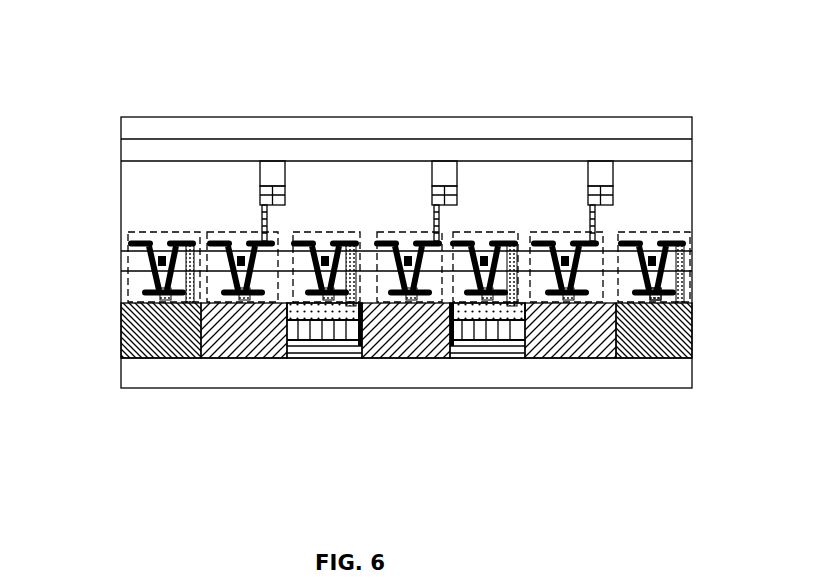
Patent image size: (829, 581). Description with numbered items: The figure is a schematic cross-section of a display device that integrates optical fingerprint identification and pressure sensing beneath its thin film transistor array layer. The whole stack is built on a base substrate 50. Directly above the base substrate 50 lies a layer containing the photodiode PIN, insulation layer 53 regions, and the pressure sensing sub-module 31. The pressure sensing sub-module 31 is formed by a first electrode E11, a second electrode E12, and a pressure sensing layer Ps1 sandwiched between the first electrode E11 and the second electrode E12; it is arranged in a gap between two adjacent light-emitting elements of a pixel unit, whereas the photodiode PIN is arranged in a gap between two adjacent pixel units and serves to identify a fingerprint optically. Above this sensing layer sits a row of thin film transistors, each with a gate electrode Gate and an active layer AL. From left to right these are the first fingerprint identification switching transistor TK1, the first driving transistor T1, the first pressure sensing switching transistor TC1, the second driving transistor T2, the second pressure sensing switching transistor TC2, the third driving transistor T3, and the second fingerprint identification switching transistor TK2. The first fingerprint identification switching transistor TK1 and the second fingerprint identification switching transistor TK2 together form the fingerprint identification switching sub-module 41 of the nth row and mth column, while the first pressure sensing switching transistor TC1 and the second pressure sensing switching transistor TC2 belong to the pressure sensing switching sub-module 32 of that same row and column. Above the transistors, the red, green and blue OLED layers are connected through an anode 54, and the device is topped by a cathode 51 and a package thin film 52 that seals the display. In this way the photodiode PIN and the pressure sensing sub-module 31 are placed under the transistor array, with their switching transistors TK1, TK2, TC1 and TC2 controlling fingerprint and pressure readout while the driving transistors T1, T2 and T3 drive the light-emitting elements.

The first driving transistor T1 is at (240, 232).
The second driving transistor T2 is at (404, 232).
The third driving transistor T3 is at (531, 232).
The first pressure sensing switching transistor TC1 is at (322, 232).
The second pressure sensing switching transistor TC2 is at (490, 232).
The pressure sensing switching sub-module 32 is at (416, 169).
The first fingerprint identification switching transistor TK1 is at (152, 233).
The second fingerprint identification switching transistor TK2 is at (655, 232).
The fingerprint identification switching sub-module 41 is at (379, 169).
The cathode 51 is at (683, 148).
The package thin film 52 is at (683, 128).
The insulation layer 53 is at (222, 325).
The anode 54 is at (613, 192).
The base substrate 50 is at (581, 368).
The pressure sensing sub-module 31 is at (300, 398).
The gate electrode Gate is at (157, 262).
The photodiode PIN is at (132, 333).
The active layer AL is at (657, 297).
The pressure sensing layer Ps1 is at (290, 350).
The first electrode E11 is at (337, 345).
The second electrode E12 is at (360, 330).